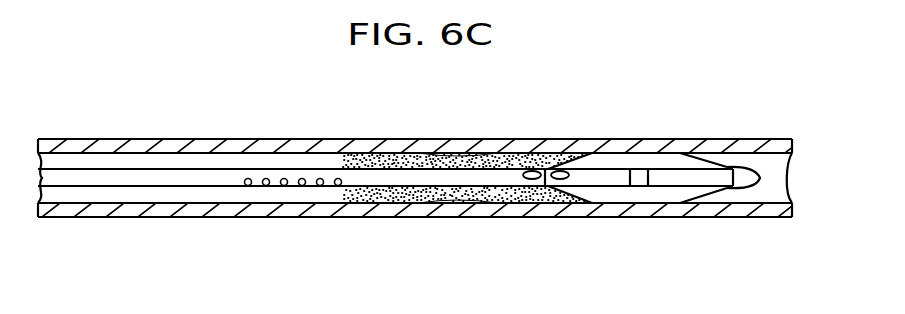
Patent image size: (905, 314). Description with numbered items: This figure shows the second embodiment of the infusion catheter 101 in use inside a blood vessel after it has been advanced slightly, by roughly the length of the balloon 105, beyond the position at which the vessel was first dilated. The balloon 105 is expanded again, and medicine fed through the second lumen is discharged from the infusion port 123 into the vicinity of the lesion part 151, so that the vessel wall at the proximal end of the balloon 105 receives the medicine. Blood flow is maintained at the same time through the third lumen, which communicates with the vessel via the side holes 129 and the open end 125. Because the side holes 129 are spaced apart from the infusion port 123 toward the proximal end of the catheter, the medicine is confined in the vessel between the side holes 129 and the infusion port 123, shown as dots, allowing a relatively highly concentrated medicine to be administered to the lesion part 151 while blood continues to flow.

The infusion catheter 101 is at (217, 181).
The balloon 105 is at (672, 165).
The infusion port 123 is at (535, 179).
The open end 125 is at (765, 181).
The side holes 129 is at (286, 187).
The lesion part 151 is at (464, 201).